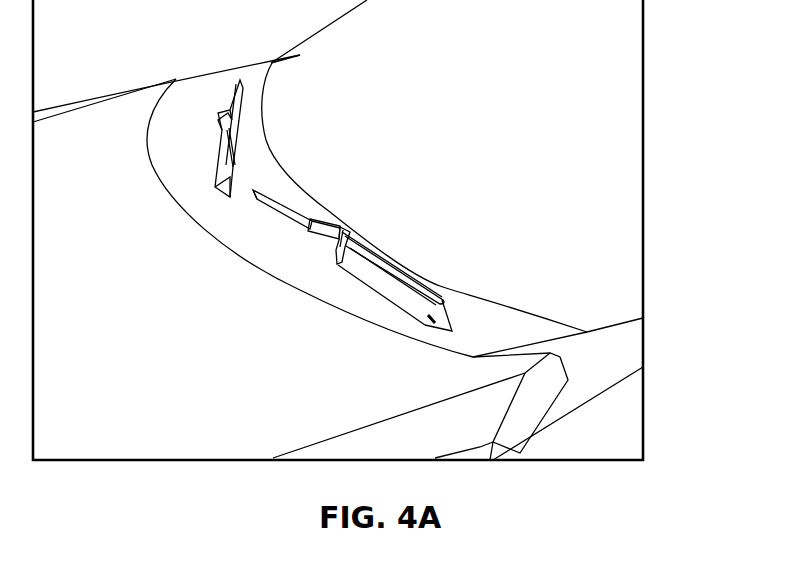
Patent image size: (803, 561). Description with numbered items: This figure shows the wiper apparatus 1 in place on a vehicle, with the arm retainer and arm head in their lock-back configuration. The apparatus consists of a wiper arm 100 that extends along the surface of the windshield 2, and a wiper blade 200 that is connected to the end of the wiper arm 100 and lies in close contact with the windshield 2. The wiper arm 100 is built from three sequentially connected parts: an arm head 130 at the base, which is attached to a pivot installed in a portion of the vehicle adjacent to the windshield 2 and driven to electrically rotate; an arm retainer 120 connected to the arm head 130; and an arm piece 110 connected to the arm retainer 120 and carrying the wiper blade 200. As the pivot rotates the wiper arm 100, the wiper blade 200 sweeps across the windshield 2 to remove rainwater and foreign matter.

The wiper apparatus 1 is at (404, 212).
The windshield 2 is at (623, 110).
The wiper arm 100 is at (446, 245).
The arm piece 110 is at (344, 229).
The arm retainer 120 is at (365, 276).
The arm head 130 is at (437, 326).
The wiper blade 200 is at (290, 210).